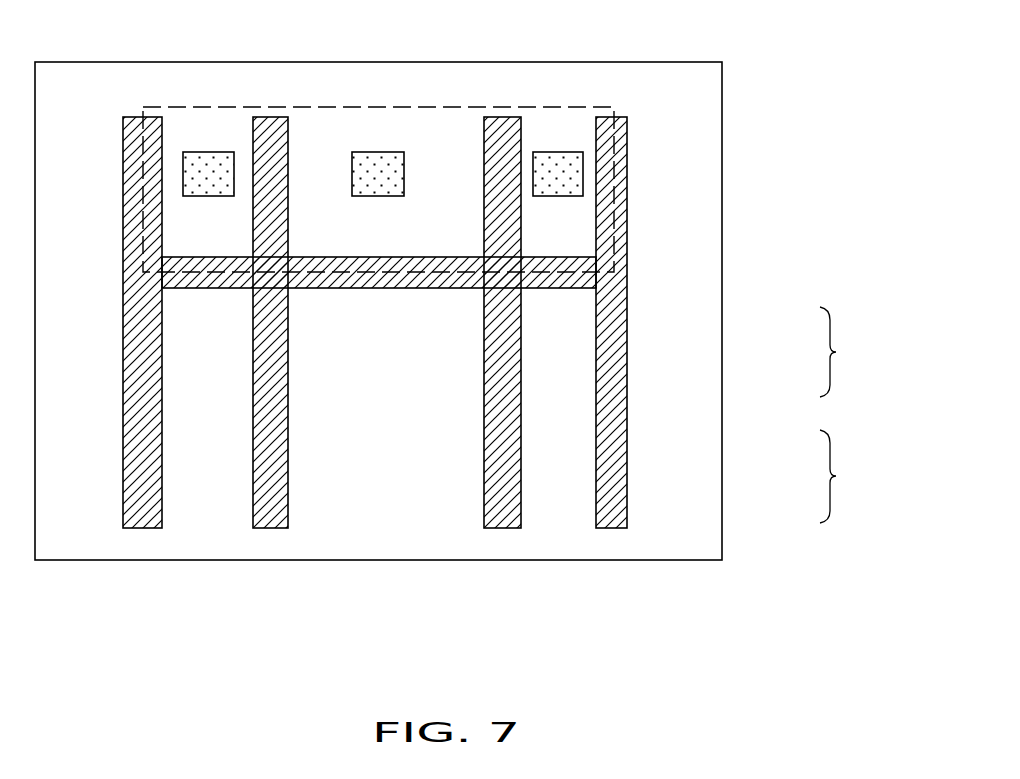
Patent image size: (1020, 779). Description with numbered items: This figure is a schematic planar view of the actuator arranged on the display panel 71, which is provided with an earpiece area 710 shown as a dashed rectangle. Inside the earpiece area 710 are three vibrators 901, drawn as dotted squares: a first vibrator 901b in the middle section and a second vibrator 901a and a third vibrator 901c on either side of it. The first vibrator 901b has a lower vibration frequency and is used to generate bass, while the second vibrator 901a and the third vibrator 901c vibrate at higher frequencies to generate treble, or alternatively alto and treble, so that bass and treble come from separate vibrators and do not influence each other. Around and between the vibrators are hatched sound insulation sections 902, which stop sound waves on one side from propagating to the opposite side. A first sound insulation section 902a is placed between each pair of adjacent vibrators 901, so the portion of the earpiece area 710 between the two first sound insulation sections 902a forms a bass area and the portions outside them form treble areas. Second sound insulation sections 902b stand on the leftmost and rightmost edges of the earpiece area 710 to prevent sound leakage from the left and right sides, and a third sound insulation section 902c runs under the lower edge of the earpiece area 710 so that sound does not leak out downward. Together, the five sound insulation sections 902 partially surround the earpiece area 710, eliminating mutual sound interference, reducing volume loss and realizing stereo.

The display panel 71 is at (392, 538).
The earpiece area 710 is at (331, 107).
The vibrator 901 is at (857, 352).
The second vibrator 901a is at (200, 168).
The first vibrator 901b is at (377, 166).
The third vibrator 901c is at (557, 166).
The sound insulation section 902 is at (857, 476).
The first sound insulation section 902a is at (484, 400).
The second sound insulation section 902b is at (123, 388).
The third sound insulation section 902c is at (377, 258).